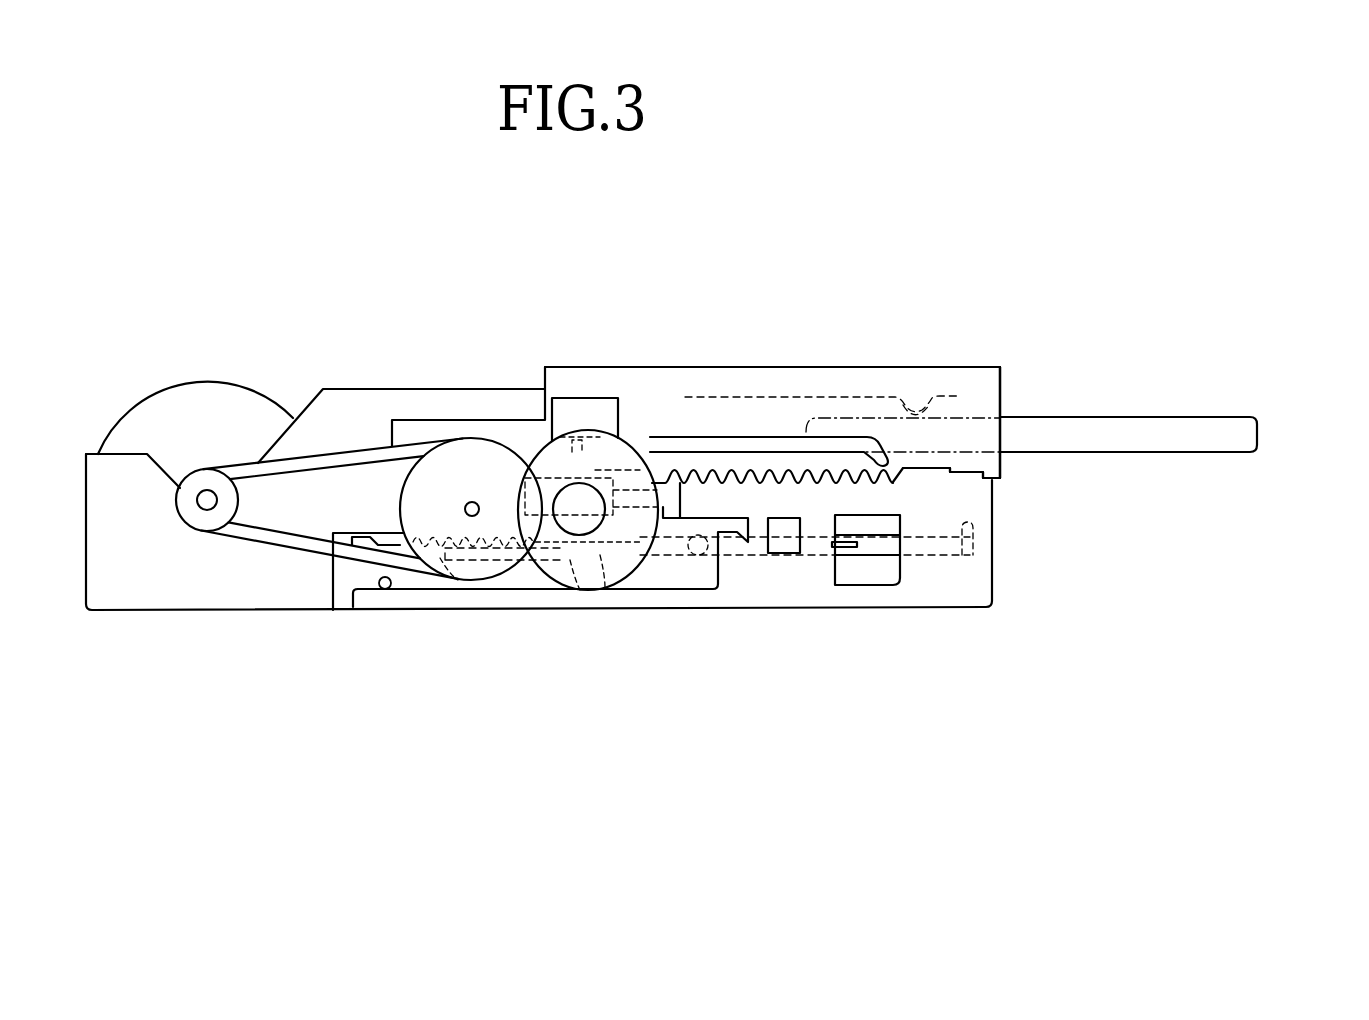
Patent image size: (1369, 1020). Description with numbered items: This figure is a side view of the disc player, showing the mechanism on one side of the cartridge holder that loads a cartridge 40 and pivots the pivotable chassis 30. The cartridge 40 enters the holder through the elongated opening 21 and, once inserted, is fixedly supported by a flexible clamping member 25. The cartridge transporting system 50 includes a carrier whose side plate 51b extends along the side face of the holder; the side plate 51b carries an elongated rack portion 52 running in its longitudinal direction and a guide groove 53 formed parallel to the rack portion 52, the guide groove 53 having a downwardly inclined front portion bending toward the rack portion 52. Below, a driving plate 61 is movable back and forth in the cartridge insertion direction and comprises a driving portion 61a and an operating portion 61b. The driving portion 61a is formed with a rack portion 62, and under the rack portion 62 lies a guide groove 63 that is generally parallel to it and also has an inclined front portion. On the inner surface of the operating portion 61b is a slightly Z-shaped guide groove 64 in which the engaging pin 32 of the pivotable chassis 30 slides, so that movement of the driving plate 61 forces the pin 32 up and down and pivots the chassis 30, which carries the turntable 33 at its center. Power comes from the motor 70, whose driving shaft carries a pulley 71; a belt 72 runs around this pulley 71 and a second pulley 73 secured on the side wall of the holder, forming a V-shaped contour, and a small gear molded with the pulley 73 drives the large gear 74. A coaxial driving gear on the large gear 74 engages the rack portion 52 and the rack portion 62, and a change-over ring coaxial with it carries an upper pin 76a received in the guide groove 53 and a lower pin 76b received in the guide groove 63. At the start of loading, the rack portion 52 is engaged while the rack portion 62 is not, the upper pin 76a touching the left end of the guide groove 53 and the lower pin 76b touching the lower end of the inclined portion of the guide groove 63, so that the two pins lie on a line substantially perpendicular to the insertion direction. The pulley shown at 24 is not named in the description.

The elongated opening 21 is at (1003, 433).
The pulley 24 is at (463, 435).
The flexible clamping member 25 is at (895, 395).
The pivotable chassis 30 is at (992, 555).
The engaging pin 32 is at (718, 555).
The turntable 33 is at (713, 487).
The cartridge 40 is at (1243, 440).
The cartridge transporting system 50 is at (975, 360).
The side plate 51b is at (990, 382).
The rack portion 52 is at (828, 452).
The guide groove 53 is at (713, 438).
The driving plate 61 is at (688, 580).
The driving portion 61a is at (386, 612).
The operating portion 61b is at (598, 473).
The rack portion 62 is at (493, 530).
The guide groove 63 is at (483, 560).
The guide groove 64 is at (624, 522).
The motor 70 is at (187, 403).
The pulley 71 is at (180, 510).
The belt 72 is at (247, 540).
The pulley 73 is at (460, 570).
The large gear 74 is at (607, 577).
The upper pin 76a is at (578, 440).
The lower pin 76b is at (582, 591).